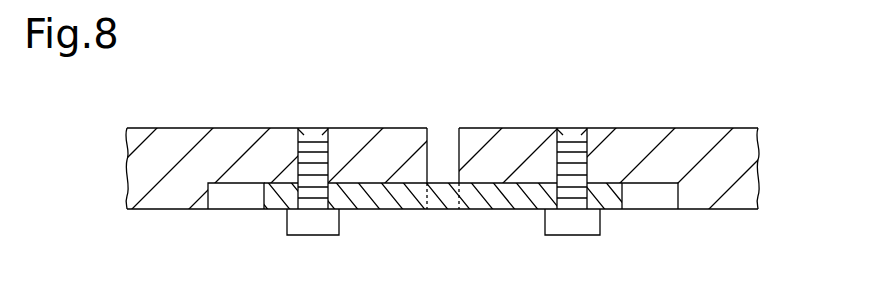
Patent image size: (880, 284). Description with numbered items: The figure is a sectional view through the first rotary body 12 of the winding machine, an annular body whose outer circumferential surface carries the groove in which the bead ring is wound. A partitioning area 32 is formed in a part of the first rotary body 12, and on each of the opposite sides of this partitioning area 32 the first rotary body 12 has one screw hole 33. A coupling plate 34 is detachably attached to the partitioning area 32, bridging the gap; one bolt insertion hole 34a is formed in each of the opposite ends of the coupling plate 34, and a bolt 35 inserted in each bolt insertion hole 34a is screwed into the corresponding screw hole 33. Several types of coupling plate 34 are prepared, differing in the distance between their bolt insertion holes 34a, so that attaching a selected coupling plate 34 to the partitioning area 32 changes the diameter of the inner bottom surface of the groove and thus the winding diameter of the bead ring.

The first rotary body 12 is at (183, 136).
The partitioning area 32 is at (428, 140).
The screw hole 33 is at (306, 140).
The coupling plate 34 is at (413, 212).
The bolt insertion hole 34a is at (312, 210).
The bolt 35 is at (339, 222).